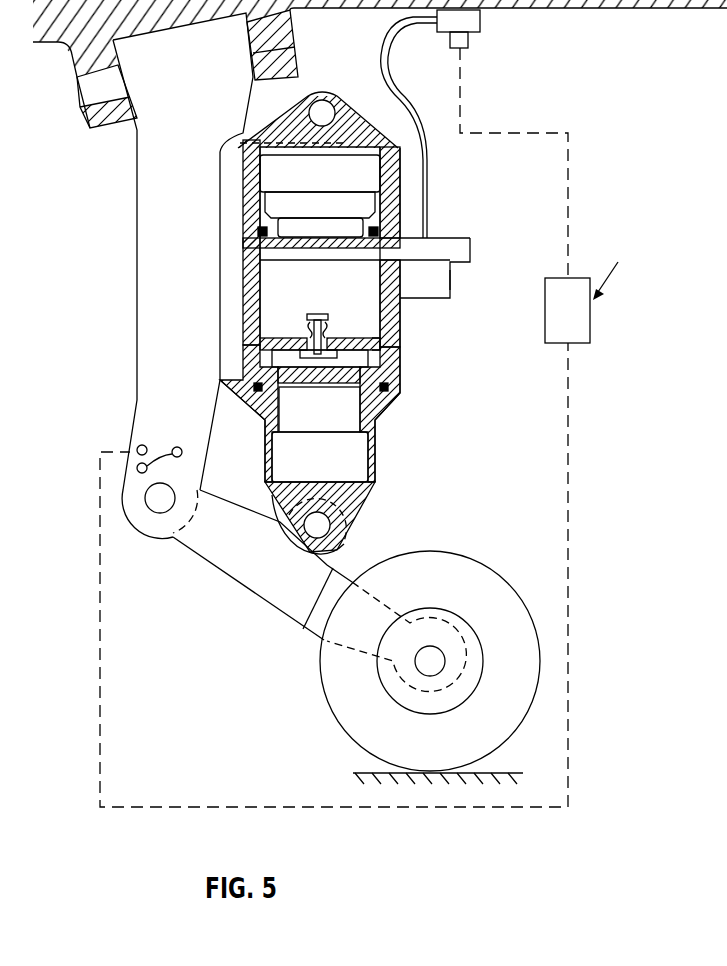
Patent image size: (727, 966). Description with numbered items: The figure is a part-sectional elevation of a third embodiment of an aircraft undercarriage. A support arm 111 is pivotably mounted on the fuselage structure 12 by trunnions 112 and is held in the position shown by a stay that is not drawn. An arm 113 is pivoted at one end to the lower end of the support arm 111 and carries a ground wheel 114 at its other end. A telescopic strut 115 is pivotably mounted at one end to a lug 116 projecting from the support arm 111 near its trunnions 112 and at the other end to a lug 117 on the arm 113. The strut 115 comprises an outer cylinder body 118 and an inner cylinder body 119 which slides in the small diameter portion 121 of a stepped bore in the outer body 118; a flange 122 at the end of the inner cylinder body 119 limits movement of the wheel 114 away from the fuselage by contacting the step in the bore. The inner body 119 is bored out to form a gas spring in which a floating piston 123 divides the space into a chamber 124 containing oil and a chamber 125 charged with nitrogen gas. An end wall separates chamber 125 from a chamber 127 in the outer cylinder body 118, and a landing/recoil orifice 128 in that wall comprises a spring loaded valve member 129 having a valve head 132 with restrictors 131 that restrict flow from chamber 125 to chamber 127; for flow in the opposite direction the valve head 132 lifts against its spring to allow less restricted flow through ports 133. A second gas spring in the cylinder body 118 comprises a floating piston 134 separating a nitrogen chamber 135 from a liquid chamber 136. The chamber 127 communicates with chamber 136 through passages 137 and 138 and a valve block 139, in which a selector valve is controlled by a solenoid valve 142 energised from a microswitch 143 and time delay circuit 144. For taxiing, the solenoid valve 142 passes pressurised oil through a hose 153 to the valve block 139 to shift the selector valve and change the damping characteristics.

The fuselage structure 12 is at (74, 48).
The trunnions 112 is at (88, 98).
The support arm 111 is at (142, 245).
The lug 116 is at (288, 97).
The hose 153 is at (428, 150).
The solenoid valve 142 is at (480, 34).
The chamber 135 is at (331, 183).
The floating piston 134 is at (258, 201).
The liquid chamber 136 is at (405, 228).
The passage 138 is at (398, 246).
The passage 137 is at (398, 271).
The valve block 139 is at (456, 286).
The chamber 127 is at (243, 275).
The outer cylinder body 118 is at (390, 315).
The spring loaded valve member 129 is at (319, 312).
The landing/recoil orifice 128 is at (326, 313).
The ports 133 is at (333, 340).
The chamber 125 is at (260, 345).
The flange 122 is at (383, 348).
The restrictors 131 is at (314, 360).
The valve head 132 is at (388, 378).
The floating piston 123 is at (290, 386).
The small diameter portion 121 is at (378, 423).
The chamber 124 is at (357, 476).
The inner cylinder body 119 is at (368, 498).
The lug 117 is at (343, 548).
The microswitch 143 is at (184, 452).
The arm 113 is at (227, 568).
The ground wheel 114 is at (483, 580).
The telescopic strut 115 is at (407, 362).
The time delay circuit 144 is at (550, 347).